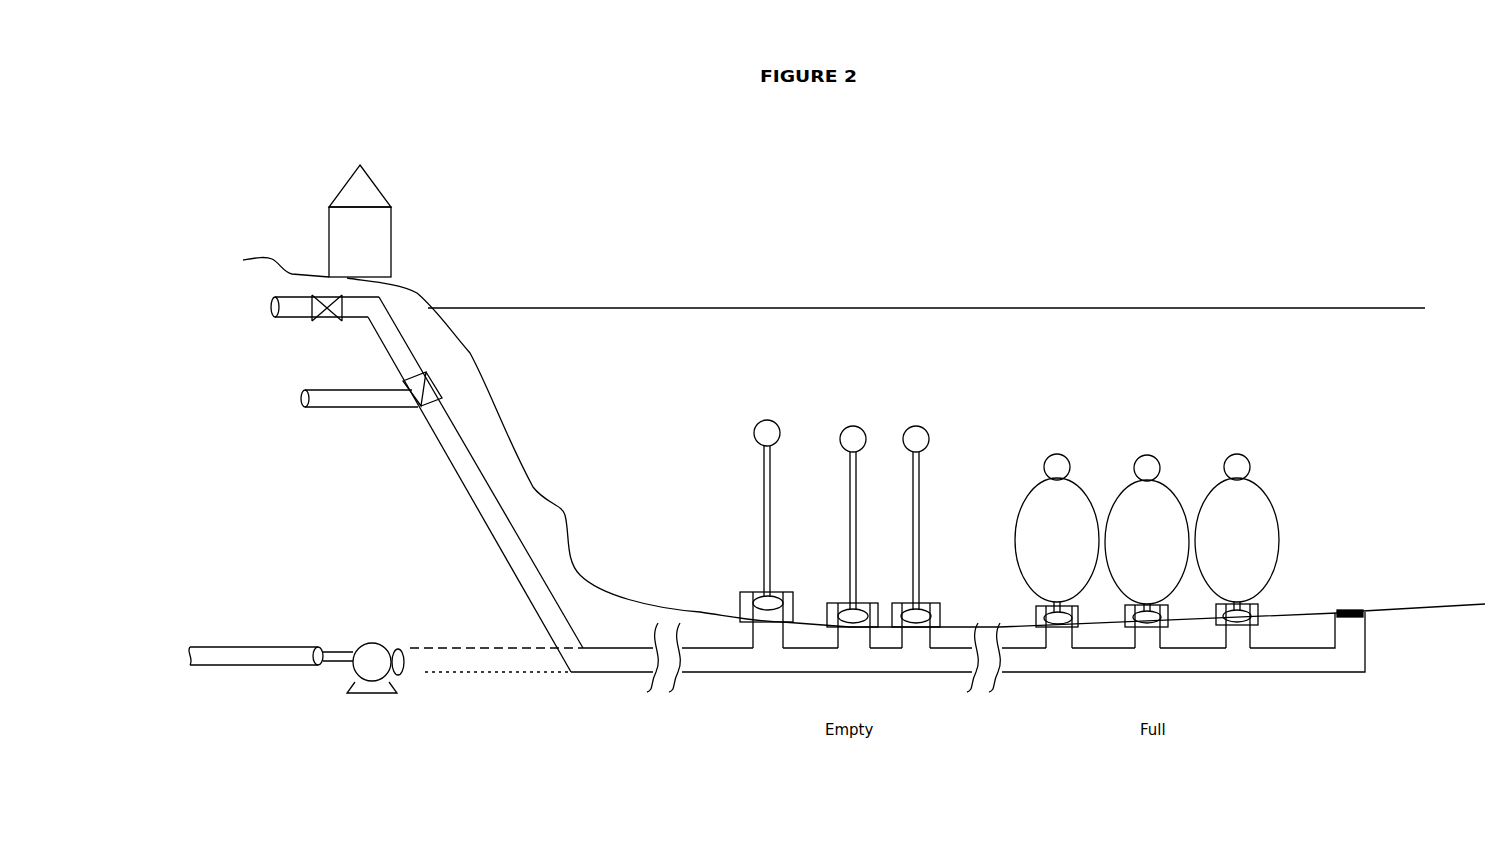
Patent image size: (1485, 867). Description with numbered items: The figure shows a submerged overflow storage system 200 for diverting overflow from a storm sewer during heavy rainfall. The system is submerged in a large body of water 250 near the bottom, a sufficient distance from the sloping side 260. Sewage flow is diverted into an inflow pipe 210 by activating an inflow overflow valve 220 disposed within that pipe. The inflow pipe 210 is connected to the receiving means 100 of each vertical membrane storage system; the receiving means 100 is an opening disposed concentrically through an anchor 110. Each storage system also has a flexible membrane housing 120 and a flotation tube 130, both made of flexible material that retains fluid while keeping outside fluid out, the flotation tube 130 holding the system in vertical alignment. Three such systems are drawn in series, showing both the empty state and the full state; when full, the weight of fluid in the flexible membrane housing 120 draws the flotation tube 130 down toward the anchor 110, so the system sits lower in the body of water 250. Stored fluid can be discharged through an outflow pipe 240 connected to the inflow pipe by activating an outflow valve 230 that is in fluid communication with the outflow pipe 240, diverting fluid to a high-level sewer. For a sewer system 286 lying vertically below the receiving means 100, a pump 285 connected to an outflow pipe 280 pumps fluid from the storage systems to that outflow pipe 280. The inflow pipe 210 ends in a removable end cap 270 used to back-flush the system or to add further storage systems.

The receiving means 100 is at (767, 611).
The anchor 110 is at (737, 596).
The flexible membrane housing 120 is at (761, 505).
The flotation tube 130 is at (753, 432).
The submerged overflow storage system 200 is at (788, 255).
The inflow pipe 210 is at (365, 332).
The inflow overflow valve 220 is at (330, 296).
The outflow valve 230 is at (415, 397).
The outflow pipe 240 is at (328, 402).
The body of water 250 is at (600, 345).
The sloping side 260 is at (560, 518).
The end cap 270 is at (1348, 606).
The outflow pipe 280 is at (418, 672).
The pump 285 is at (358, 640).
The sewer system 286 is at (253, 643).